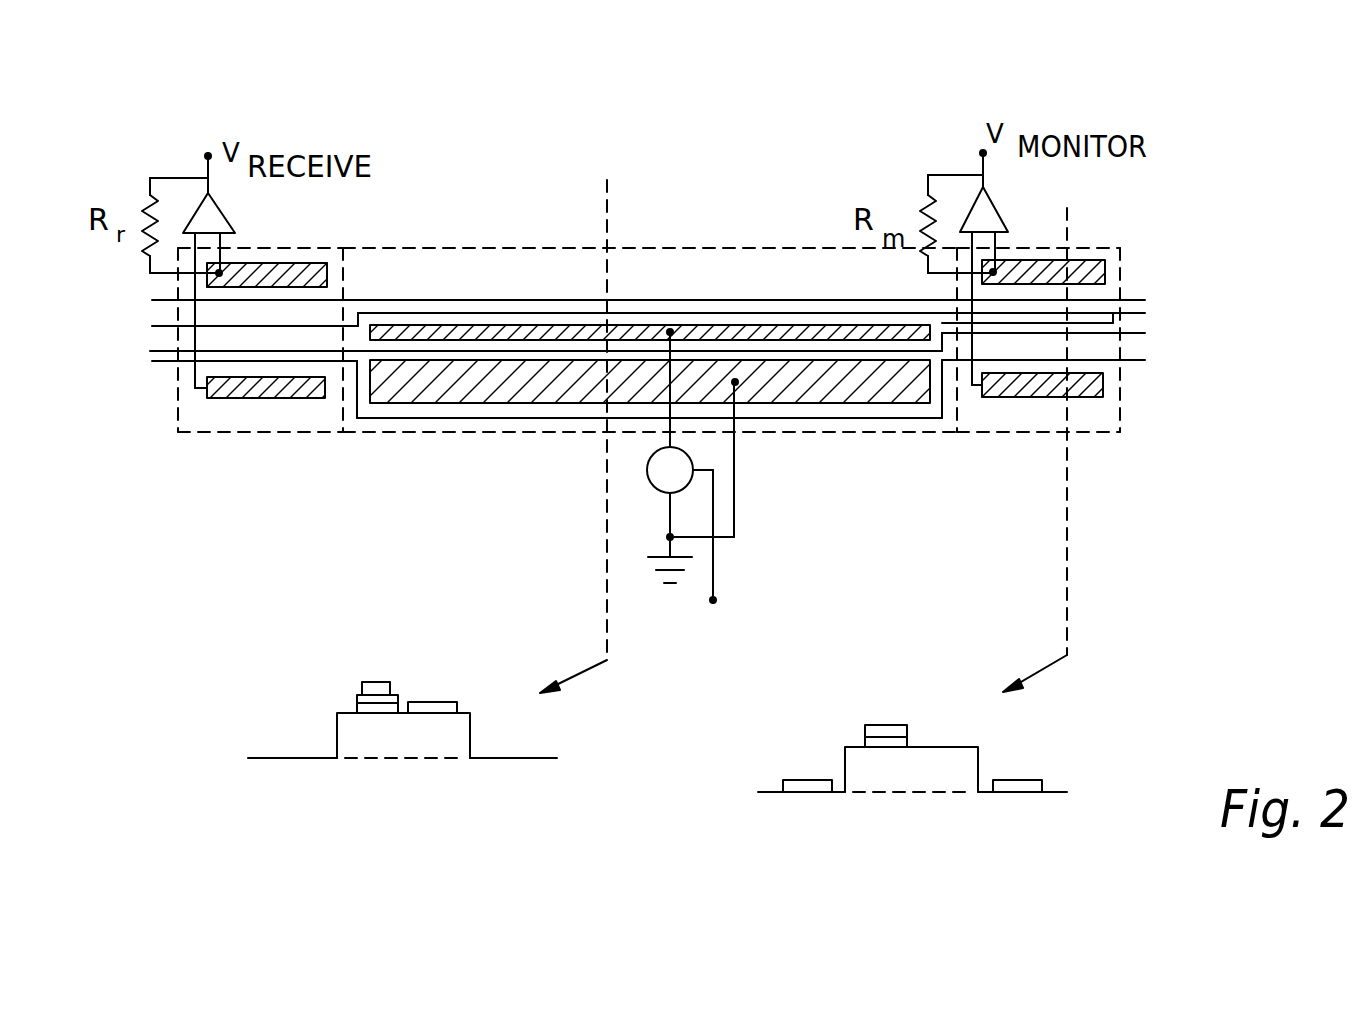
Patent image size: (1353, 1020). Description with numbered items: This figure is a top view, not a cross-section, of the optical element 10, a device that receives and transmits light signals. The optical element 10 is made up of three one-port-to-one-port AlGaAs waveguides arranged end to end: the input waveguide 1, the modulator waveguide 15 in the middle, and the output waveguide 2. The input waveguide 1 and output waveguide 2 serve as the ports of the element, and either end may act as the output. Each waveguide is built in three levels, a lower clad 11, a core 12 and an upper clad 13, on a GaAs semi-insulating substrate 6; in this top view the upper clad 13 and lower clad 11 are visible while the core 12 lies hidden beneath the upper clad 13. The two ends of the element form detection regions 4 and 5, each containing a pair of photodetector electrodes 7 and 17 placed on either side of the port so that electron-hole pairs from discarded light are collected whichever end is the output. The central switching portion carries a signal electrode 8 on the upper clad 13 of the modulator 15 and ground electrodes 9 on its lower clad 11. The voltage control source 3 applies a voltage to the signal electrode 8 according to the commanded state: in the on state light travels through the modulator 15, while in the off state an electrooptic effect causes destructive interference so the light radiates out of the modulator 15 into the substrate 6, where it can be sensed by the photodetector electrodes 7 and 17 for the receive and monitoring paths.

The input waveguide 1 is at (148, 347).
The output waveguide 2 is at (1150, 311).
The voltage control source 3 is at (655, 490).
The detection region 4 is at (292, 433).
The detection region 5 is at (1006, 433).
The GaAs semi-insulating substrate 6 is at (613, 145).
The photodetector electrode 7 is at (268, 262).
The signal electrode 8 is at (641, 325).
The ground electrodes 9 is at (636, 404).
The optical element 10 is at (735, 113).
The lower clad 11 is at (155, 332).
The core 12 is at (341, 712).
The upper clad 13 is at (157, 313).
The modulator waveguide 15 is at (436, 246).
The photodetector electrode 17 is at (1030, 246).